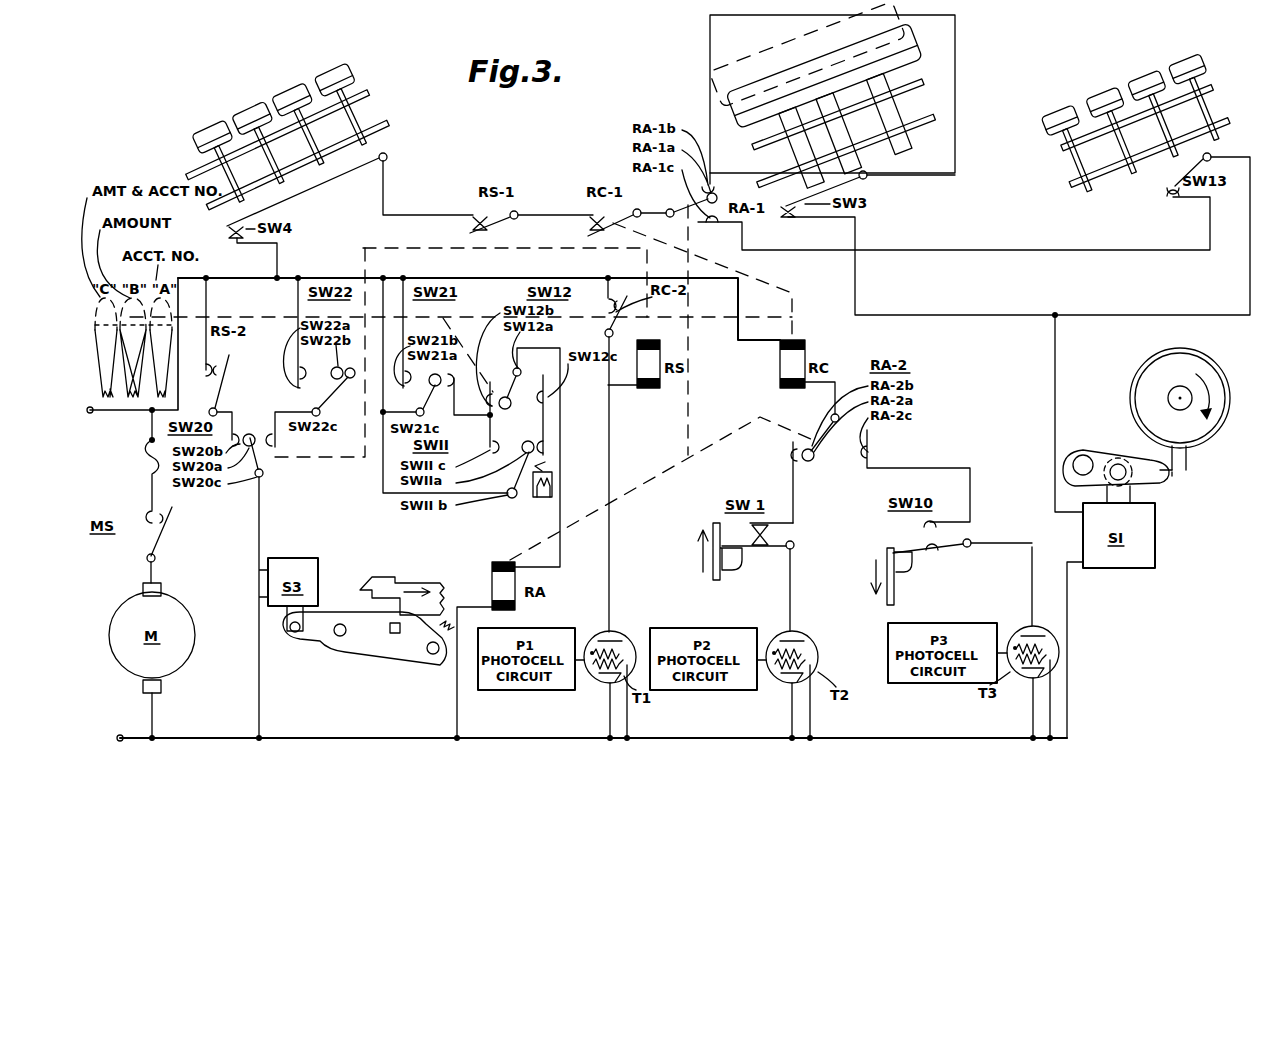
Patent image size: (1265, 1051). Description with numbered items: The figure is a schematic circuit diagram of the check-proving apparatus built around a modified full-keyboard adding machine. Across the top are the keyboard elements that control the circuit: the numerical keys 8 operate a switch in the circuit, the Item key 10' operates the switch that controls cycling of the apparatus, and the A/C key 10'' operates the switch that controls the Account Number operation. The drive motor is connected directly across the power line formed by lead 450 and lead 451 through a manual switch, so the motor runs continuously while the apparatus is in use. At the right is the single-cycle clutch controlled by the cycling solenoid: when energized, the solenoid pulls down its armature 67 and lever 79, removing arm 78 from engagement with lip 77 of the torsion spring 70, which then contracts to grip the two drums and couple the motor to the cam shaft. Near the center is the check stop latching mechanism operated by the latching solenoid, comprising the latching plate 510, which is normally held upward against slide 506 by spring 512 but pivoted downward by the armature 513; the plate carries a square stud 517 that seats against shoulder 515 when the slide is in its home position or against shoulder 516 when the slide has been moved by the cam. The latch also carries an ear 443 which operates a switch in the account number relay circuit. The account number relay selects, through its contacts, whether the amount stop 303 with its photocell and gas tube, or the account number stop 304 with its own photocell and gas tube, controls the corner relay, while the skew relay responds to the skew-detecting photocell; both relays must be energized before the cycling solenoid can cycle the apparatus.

The numerical keys 8 is at (246, 128).
The Item key 10' is at (832, 103).
The A/C key 10'' is at (1137, 116).
The lead 450 is at (100, 415).
The lead 451 is at (126, 741).
The ear 443 is at (534, 488).
The slide 506 is at (440, 600).
The latching plate 510 is at (332, 623).
The spring 512 is at (441, 652).
The armature 513 is at (291, 628).
The shoulder 515 is at (385, 600).
The shoulder 516 is at (345, 636).
The square stud 517 is at (394, 634).
The amount stop 303 is at (713, 525).
The account number stop 304 is at (889, 550).
The armature 67 is at (1126, 492).
The torsion spring 70 is at (1131, 383).
The lip 77 is at (1182, 469).
The arm 78 is at (1160, 462).
The lever 79 is at (1085, 456).